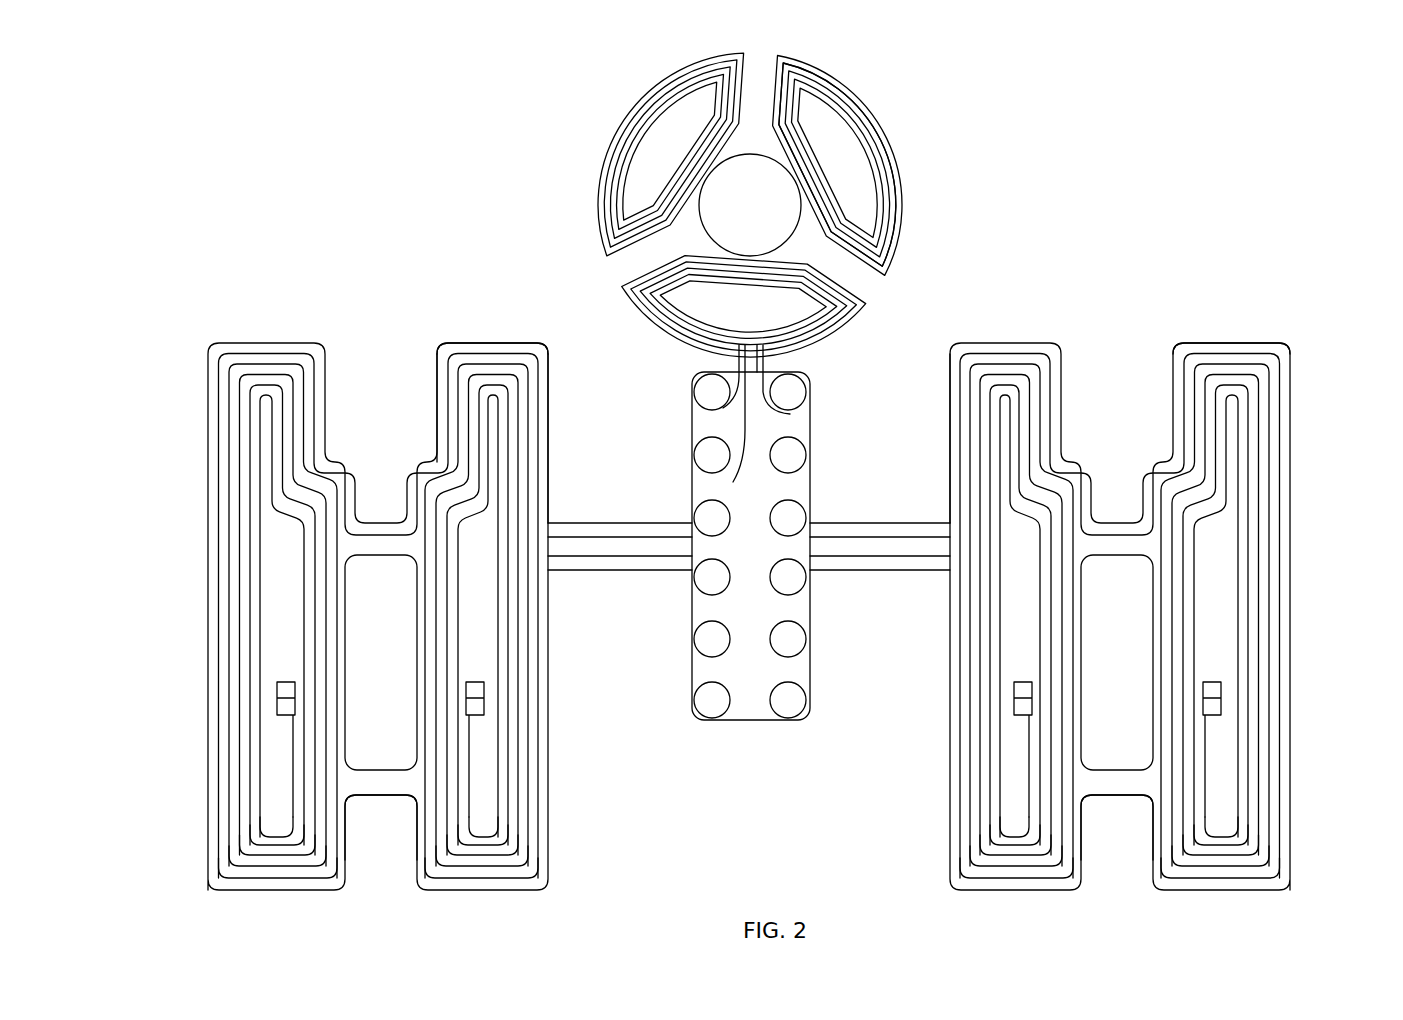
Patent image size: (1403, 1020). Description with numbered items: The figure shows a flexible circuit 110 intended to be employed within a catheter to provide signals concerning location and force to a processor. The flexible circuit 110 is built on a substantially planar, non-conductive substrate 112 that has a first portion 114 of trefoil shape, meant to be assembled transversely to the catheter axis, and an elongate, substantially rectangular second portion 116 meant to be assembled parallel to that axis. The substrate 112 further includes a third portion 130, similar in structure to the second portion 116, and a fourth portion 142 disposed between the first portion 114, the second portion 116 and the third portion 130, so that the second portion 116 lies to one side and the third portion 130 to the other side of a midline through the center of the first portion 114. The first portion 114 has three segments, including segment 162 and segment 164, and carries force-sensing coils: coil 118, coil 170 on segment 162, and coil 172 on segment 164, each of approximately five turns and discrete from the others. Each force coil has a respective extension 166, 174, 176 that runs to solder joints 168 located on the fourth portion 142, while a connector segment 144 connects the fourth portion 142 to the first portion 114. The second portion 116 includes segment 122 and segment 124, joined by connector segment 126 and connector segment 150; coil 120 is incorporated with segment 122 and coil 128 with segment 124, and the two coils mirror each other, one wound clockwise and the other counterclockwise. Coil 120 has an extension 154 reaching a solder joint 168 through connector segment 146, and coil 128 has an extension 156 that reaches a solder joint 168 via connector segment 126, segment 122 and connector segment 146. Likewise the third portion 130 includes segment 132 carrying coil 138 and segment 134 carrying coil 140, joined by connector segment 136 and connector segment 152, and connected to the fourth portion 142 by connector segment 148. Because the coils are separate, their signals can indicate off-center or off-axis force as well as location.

The flexible circuit 110 is at (458, 118).
The substrate 112 is at (490, 340).
The first portion 114 is at (893, 124).
The second portion 116 is at (900, 153).
The coil 118 is at (903, 192).
The coil 120 is at (548, 432).
The segment 122 is at (487, 892).
The segment 124 is at (270, 892).
The connector segment 126 is at (380, 520).
The coil 128 is at (208, 514).
The third portion 130 is at (1175, 381).
The segment 132 is at (1018, 892).
The segment 134 is at (1232, 892).
The connector segment 136 is at (1118, 520).
The coil 138 is at (950, 690).
The coil 140 is at (1290, 708).
The fourth portion 142 is at (754, 722).
The connector segment 144 is at (782, 373).
The connector segment 146 is at (583, 574).
The connector segment 148 is at (865, 574).
The connector segment 150 is at (382, 797).
The connector segment 152 is at (1118, 797).
The extension 154 is at (652, 572).
The extension 156 is at (652, 522).
The segment 162 is at (848, 298).
The segment 164 is at (663, 80).
The extension 166 is at (800, 411).
The solder joints 168 is at (777, 655).
The coil 170 is at (663, 276).
The coil 172 is at (627, 140).
The extension 174 is at (733, 425).
The extension 176 is at (737, 373).